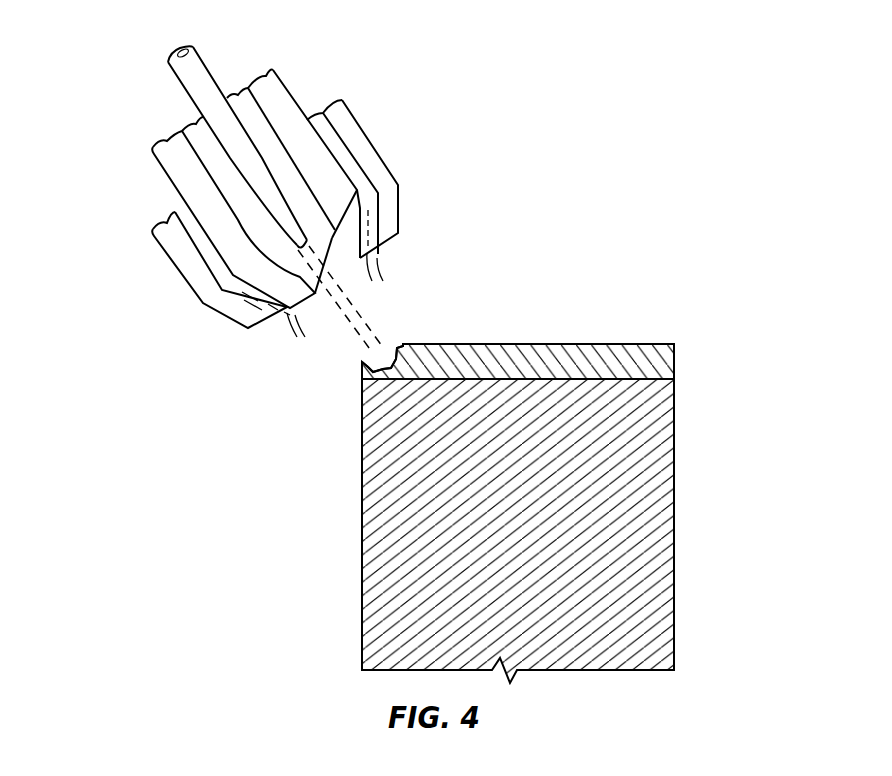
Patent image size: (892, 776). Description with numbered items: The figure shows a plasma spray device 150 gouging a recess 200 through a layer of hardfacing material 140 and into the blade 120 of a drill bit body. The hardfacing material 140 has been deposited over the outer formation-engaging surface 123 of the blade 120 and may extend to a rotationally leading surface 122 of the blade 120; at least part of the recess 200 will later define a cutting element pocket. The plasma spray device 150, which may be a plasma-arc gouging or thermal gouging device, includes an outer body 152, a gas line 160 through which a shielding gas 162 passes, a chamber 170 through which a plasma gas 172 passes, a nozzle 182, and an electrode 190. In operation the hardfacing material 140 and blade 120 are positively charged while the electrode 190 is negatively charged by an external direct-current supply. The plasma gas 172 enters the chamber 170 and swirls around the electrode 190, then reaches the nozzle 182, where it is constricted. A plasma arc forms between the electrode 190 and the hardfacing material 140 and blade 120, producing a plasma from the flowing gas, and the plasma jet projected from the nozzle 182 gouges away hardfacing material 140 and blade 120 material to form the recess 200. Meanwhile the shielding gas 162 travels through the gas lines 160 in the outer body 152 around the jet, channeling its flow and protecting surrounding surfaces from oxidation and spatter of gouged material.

The blade 120 is at (640, 525).
The rotationally leading surface 122 is at (362, 523).
The outer formation-engaging surface 123 is at (600, 372).
The layer of hardfacing material 140 is at (660, 363).
The plasma spray device 150 is at (392, 113).
The outer body 152 is at (398, 212).
The gas line 160 is at (192, 250).
The shielding gas 162 is at (186, 212).
The chamber 170 is at (270, 113).
The plasma gas 172 is at (202, 137).
The nozzle 182 is at (322, 300).
The electrode 190 is at (190, 67).
The recess 200 is at (383, 360).